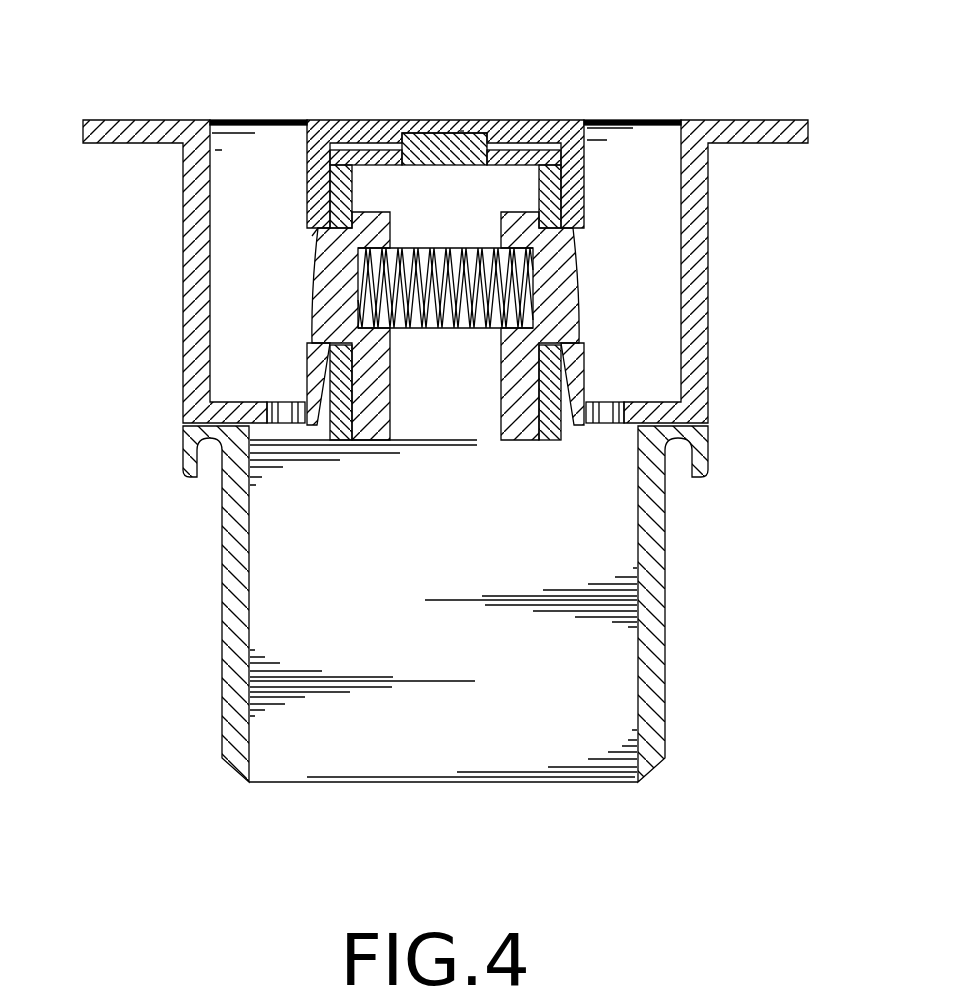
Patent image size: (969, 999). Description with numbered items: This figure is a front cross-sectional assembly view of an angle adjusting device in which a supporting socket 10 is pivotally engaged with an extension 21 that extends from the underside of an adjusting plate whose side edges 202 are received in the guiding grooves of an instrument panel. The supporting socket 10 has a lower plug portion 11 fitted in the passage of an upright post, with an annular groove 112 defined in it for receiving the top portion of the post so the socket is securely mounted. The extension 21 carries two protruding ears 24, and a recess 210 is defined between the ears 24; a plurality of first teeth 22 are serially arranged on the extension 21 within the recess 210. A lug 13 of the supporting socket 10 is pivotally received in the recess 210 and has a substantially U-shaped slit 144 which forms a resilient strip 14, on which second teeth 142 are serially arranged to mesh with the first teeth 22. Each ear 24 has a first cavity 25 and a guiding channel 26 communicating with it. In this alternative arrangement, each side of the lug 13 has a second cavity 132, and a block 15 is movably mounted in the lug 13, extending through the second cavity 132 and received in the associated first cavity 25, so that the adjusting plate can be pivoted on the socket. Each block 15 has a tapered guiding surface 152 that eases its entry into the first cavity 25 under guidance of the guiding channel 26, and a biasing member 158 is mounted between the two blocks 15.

The supporting socket 10 is at (483, 604).
The lower plug portion 11 is at (473, 604).
The annular groove 112 is at (682, 455).
The lug 13 is at (477, 117).
The second cavity 132 is at (585, 228).
The resilient strip 14 is at (447, 158).
The second teeth 142 is at (413, 140).
The U-shaped slit 144 is at (493, 143).
The block 15 is at (442, 355).
The tapered guiding surface 152 is at (318, 253).
The biasing member 158 is at (433, 328).
The side edge 202 is at (793, 130).
The extension 21 is at (460, 236).
The recess 210 is at (362, 143).
The first teeth 22 is at (462, 133).
The ear 24 is at (197, 213).
The first cavity 25 is at (312, 232).
The guiding channel 26 is at (567, 440).